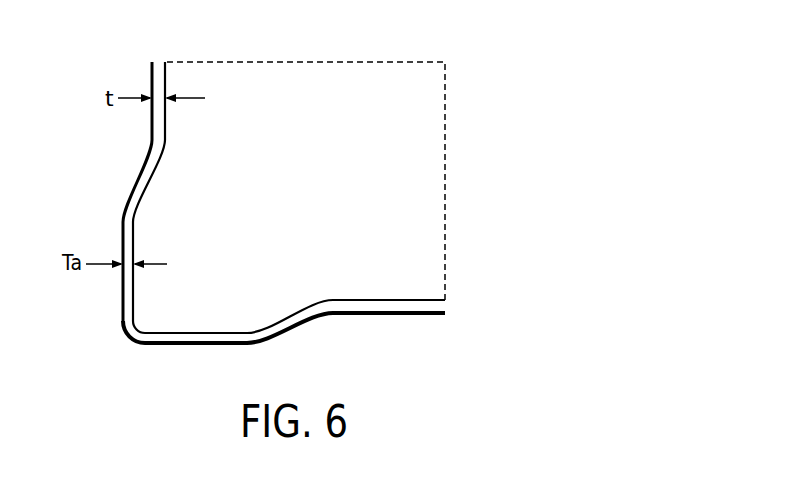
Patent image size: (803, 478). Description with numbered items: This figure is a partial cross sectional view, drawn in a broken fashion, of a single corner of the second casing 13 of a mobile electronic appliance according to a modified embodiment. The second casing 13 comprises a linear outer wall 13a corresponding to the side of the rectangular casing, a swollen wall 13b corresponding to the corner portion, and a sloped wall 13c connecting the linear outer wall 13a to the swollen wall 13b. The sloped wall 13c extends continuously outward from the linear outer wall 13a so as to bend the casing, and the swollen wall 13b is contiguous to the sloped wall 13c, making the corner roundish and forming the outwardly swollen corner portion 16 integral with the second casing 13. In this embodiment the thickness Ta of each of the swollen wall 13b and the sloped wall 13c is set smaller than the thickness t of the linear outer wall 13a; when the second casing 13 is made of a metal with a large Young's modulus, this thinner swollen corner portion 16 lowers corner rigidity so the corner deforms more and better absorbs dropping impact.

The second casing 13 is at (334, 76).
The linear outer wall 13a is at (152, 121).
The swollen wall 13b is at (123, 291).
The sloped wall 13c is at (136, 184).
The swollen corner portion 16 is at (130, 345).